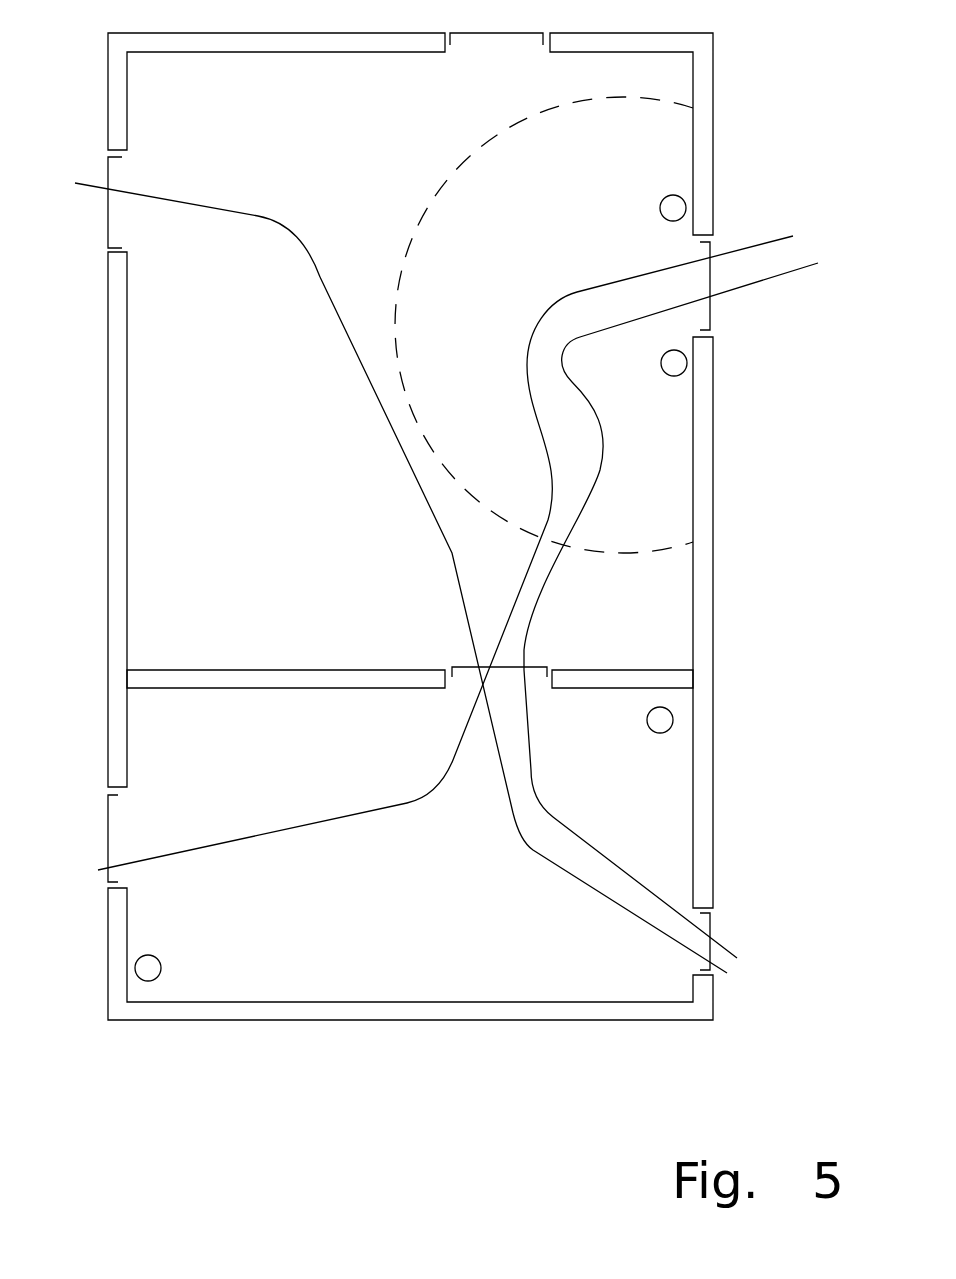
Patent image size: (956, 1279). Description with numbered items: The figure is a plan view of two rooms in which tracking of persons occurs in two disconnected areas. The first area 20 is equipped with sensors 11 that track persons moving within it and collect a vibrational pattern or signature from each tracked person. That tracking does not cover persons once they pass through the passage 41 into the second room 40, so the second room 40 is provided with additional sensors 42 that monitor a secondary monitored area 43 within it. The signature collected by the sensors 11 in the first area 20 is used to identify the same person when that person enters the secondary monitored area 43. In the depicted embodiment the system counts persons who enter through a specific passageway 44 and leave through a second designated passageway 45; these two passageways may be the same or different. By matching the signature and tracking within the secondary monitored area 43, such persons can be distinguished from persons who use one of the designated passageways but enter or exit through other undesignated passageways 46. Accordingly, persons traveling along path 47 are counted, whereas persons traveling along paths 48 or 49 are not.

The sensors 11 is at (645, 722).
The first area 20 is at (718, 773).
The second room 40 is at (718, 183).
The passage 41 is at (468, 667).
The additional sensors 42 is at (659, 210).
The secondary monitored area 43 is at (413, 228).
The specific passageway 44 is at (712, 942).
The second designated passageway 45 is at (708, 294).
The undesignated passageways 46 is at (493, 35).
The path 47 is at (577, 837).
The path 48 is at (408, 798).
The path 49 is at (377, 398).